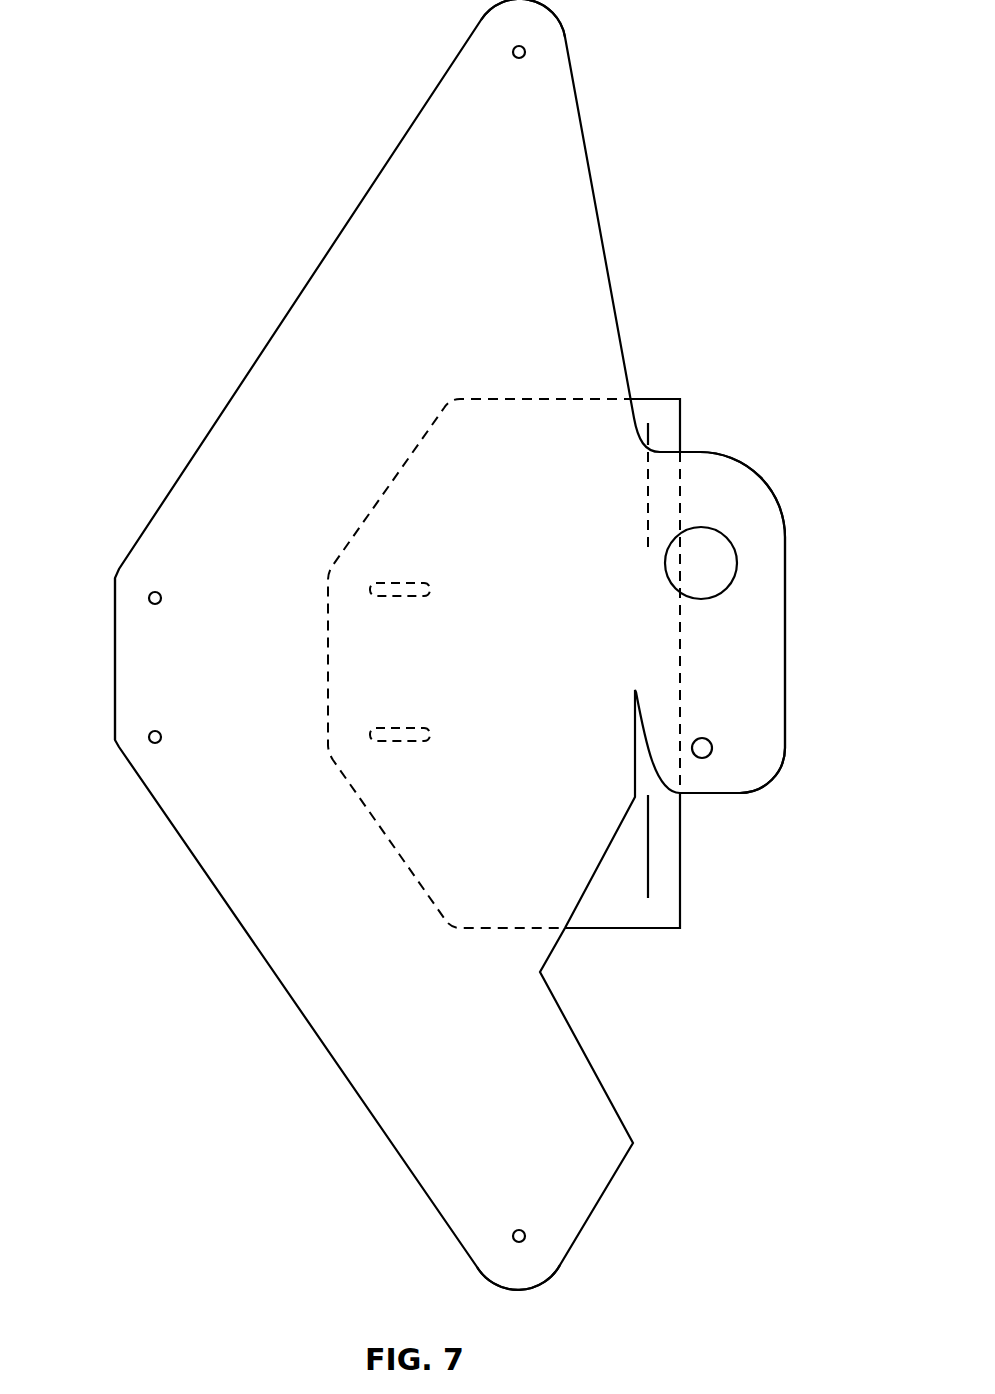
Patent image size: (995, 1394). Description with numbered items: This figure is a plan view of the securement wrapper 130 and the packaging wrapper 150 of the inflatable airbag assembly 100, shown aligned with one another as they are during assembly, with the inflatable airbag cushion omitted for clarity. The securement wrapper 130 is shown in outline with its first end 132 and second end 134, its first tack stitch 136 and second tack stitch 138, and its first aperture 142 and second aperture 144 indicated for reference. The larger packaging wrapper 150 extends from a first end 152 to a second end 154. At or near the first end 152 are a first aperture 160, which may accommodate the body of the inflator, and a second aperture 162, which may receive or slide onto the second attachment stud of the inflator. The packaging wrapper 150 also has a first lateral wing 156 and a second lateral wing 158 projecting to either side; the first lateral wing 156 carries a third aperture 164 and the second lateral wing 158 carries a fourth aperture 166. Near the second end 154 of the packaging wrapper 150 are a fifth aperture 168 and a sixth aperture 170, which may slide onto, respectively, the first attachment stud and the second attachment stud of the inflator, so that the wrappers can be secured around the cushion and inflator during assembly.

The inflatable airbag assembly 100 is at (240, 133).
The securement wrapper 130 is at (638, 930).
The first end 132 is at (682, 626).
The second end 134 is at (328, 654).
The first tack stitch 136 is at (650, 435).
The second tack stitch 138 is at (650, 860).
The first aperture 142 is at (412, 583).
The second aperture 144 is at (412, 728).
The packaging wrapper 150 is at (300, 307).
The first end 152 is at (787, 615).
The second end 154 is at (115, 685).
The first lateral wing 156 is at (536, 1158).
The second lateral wing 158 is at (536, 143).
The first aperture 160 is at (705, 528).
The second aperture 162 is at (707, 740).
The third aperture 164 is at (527, 1238).
The fourth aperture 166 is at (527, 52).
The fifth aperture 168 is at (148, 598).
The sixth aperture 170 is at (148, 737).